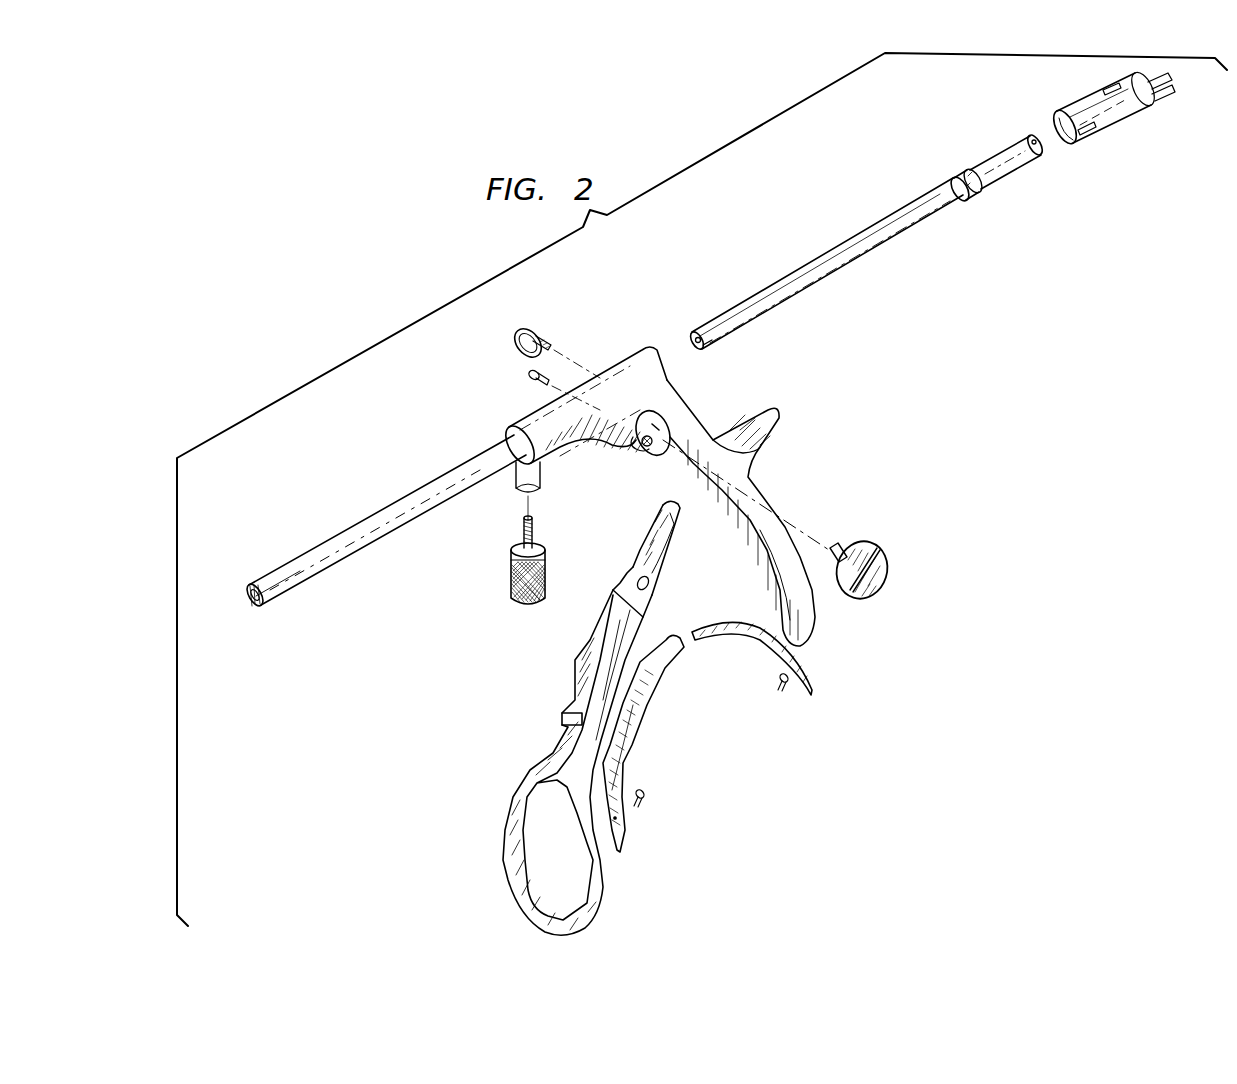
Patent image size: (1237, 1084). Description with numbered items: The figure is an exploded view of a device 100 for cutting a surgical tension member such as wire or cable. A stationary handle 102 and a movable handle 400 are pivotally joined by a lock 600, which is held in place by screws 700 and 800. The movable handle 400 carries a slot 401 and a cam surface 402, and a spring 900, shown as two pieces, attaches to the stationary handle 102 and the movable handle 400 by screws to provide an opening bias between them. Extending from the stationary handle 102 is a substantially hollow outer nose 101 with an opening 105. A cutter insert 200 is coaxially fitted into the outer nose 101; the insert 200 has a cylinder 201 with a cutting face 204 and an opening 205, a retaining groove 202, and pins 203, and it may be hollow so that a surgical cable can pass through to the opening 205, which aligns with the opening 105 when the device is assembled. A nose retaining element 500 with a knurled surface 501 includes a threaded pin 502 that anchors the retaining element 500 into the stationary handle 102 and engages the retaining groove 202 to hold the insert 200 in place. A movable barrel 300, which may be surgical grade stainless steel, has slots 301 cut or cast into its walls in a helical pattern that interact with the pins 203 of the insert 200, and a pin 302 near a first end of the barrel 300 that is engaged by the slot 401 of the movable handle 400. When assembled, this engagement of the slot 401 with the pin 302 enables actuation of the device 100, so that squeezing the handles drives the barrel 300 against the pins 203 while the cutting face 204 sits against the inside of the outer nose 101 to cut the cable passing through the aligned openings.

The device 100 is at (386, 455).
The outer nose 101 is at (342, 538).
The stationary handle 102 is at (805, 505).
The opening 105 is at (250, 600).
The cutter insert 200 is at (874, 214).
The cylinder 201 is at (745, 306).
The retaining groove 202 is at (965, 170).
The pins 203 is at (1038, 160).
The cutting face 204 is at (695, 348).
The opening 205 is at (692, 340).
The movable barrel 300 is at (1058, 100).
The slots 301 is at (1093, 134).
The pin 302 is at (1170, 92).
The movable handle 400 is at (510, 898).
The slot 401 is at (684, 518).
The cam surface 402 is at (641, 567).
The nose retaining element 500 is at (530, 608).
The knurled surface 501 is at (510, 586).
The threaded pin 502 is at (520, 532).
The lock 600 is at (884, 573).
The screw 700 is at (528, 382).
The screw 800 is at (516, 346).
The spring 900 is at (668, 660).